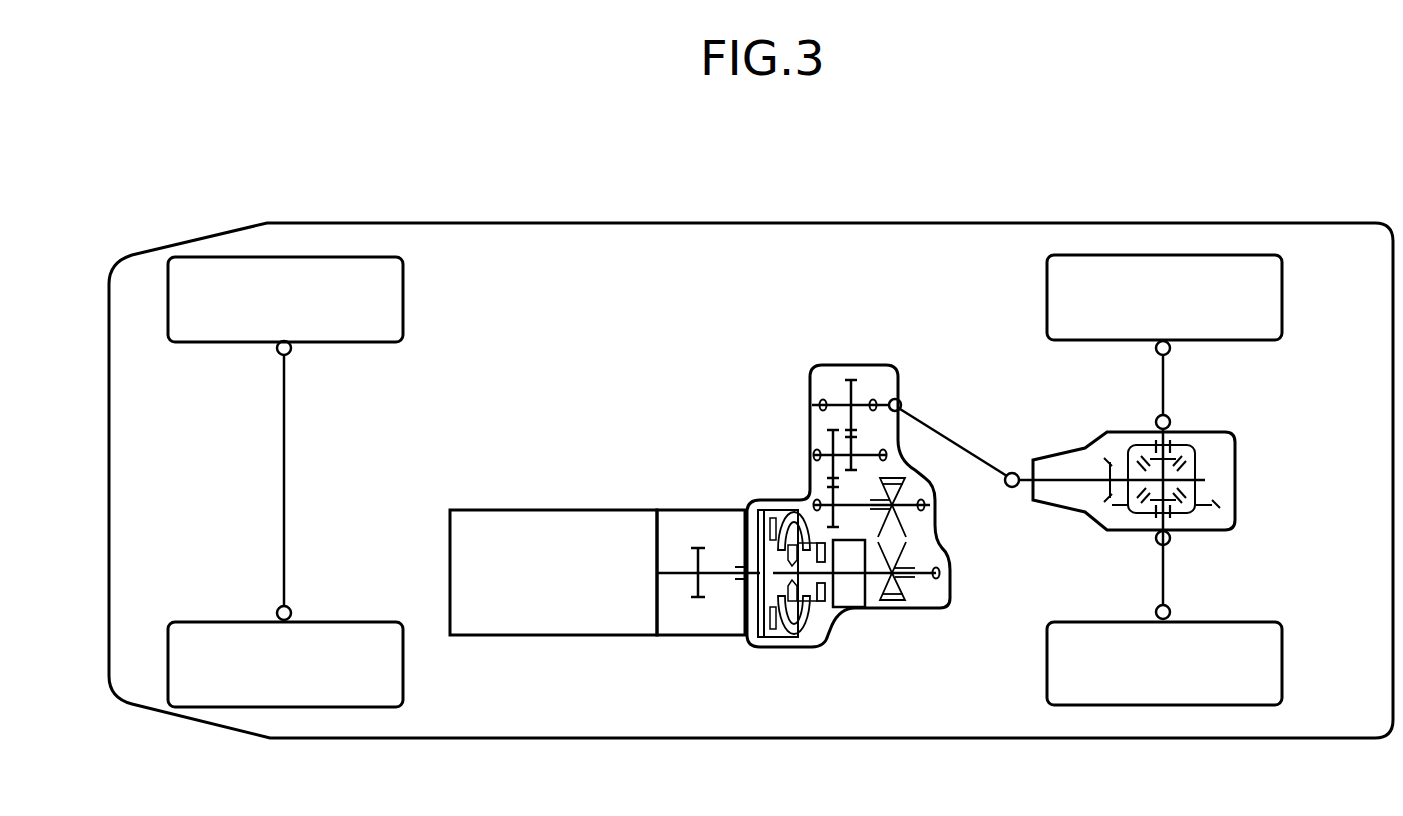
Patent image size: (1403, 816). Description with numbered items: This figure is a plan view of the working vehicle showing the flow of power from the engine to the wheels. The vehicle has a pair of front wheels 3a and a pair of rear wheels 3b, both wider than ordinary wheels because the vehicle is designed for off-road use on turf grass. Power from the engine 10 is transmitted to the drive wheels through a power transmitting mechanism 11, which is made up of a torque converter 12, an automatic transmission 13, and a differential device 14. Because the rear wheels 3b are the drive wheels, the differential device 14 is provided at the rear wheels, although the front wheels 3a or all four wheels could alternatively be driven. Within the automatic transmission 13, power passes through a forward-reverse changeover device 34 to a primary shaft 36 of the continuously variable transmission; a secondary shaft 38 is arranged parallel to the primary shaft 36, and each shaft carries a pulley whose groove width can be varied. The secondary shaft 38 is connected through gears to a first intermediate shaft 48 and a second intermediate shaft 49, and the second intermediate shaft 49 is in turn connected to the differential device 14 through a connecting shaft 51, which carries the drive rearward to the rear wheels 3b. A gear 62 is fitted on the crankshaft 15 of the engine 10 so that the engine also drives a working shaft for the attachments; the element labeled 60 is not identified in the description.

The front wheels 3a is at (352, 320).
The rear wheels 3b is at (1260, 293).
The engine 10 is at (528, 528).
The power transmitting mechanism 11 is at (776, 398).
The torque converter 12 is at (775, 640).
The automatic transmission 13 is at (920, 590).
The differential device 14 is at (1238, 469).
The crankshaft 15 is at (679, 568).
The forward-reverse changeover device 34 is at (850, 600).
The primary shaft 36 is at (938, 556).
The secondary shaft 38 is at (912, 502).
The first intermediate shaft 48 is at (866, 450).
The second intermediate shaft 49 is at (860, 403).
The connecting shaft 51 is at (966, 449).
The clutch 60 is at (818, 600).
The gear 62 is at (698, 600).